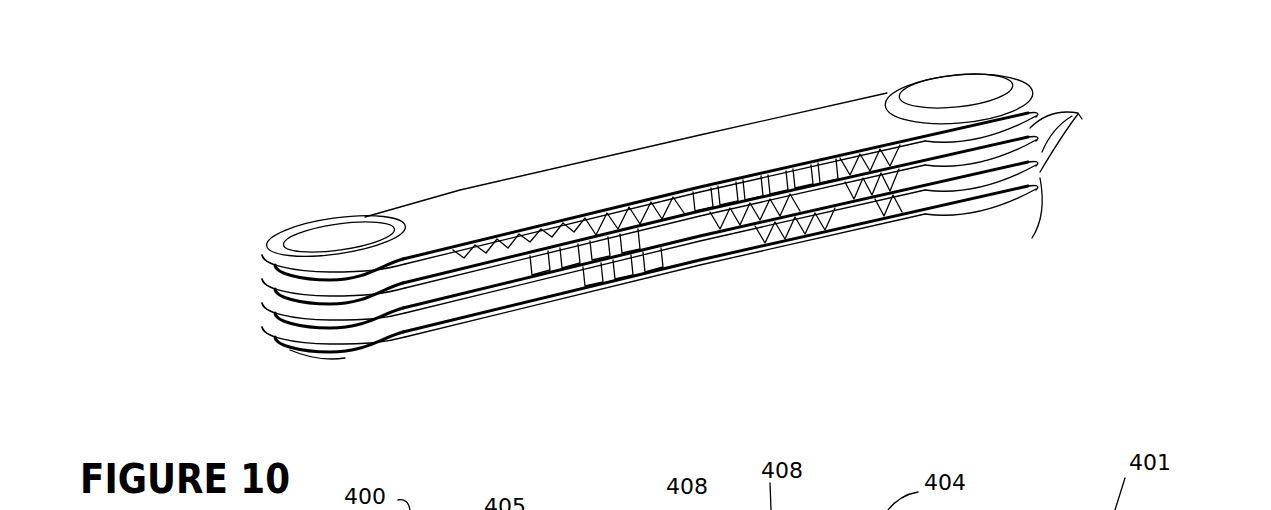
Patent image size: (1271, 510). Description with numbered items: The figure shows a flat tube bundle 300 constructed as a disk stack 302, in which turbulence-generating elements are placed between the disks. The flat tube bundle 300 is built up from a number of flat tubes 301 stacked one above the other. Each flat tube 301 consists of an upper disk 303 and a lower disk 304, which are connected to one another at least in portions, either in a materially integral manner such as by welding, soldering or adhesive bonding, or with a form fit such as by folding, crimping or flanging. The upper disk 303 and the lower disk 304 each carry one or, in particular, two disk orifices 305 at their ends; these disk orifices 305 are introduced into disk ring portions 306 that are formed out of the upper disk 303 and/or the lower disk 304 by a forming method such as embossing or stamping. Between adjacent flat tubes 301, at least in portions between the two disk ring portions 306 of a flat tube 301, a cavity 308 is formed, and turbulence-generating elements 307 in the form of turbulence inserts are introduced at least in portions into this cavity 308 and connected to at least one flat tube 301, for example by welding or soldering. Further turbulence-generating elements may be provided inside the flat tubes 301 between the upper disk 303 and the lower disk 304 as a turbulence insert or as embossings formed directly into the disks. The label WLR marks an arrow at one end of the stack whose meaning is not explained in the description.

The flat tube bundle 300 is at (347, 139).
The flat tube 301 is at (465, 208).
The disk stack 302 is at (732, 126).
The upper disk 303 is at (413, 215).
The lower disk 304 is at (443, 258).
The disk orifice 305 is at (300, 235).
The disk ring portion 306 is at (270, 245).
The turbulence-generating element 307 is at (562, 213).
The cavity 308 is at (498, 273).
The wire lead direction WLR is at (1092, 90).